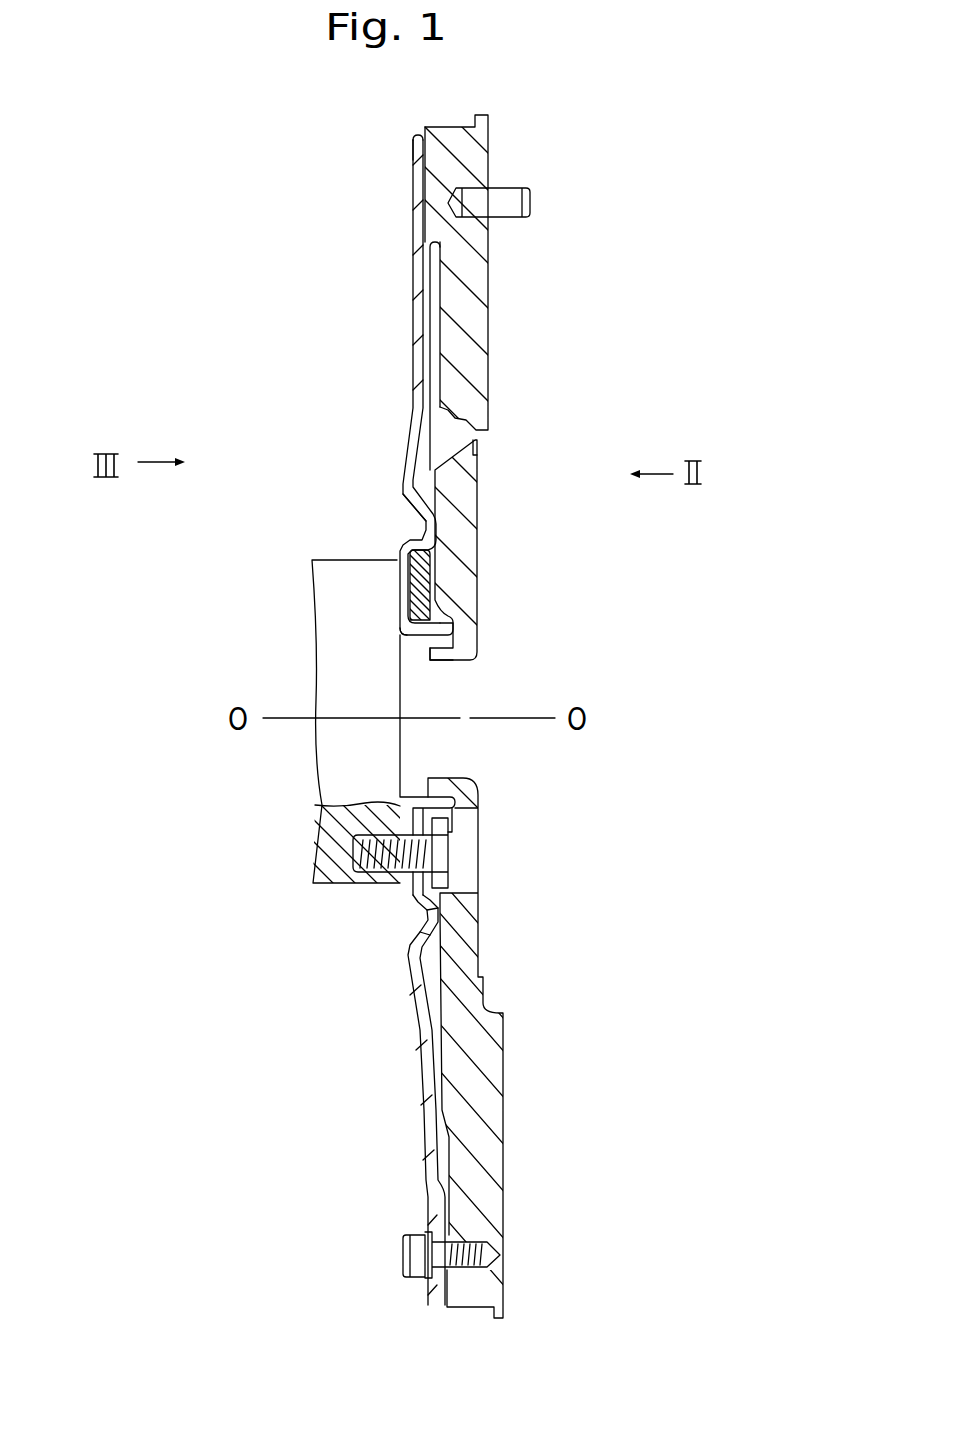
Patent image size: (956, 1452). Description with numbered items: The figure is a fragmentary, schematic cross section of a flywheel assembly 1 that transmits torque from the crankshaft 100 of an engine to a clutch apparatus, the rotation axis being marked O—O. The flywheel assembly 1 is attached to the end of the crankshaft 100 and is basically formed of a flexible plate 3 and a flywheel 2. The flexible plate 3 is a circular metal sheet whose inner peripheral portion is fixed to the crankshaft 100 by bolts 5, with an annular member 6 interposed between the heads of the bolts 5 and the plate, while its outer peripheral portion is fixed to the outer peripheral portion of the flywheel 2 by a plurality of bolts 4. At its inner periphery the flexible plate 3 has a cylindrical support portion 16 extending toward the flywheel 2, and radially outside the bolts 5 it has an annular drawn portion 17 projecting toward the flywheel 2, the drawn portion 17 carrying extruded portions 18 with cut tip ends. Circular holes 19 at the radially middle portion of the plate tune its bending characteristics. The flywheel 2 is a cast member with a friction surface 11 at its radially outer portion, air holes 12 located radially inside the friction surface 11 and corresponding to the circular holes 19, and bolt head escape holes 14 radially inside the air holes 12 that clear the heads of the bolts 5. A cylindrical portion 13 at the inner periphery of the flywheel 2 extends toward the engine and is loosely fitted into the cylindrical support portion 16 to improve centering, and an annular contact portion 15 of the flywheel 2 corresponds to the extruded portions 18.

The flywheel assembly 1 is at (612, 305).
The flywheel 2 is at (460, 388).
The flexible plate 3 is at (386, 448).
The bolts 4 is at (418, 1253).
The bolts 5 is at (365, 884).
The annular member 6 is at (418, 590).
The friction surface 11 is at (490, 282).
The air holes 12 is at (480, 447).
The cylindrical portion 13 is at (440, 654).
The bolt head escape holes 14 is at (465, 890).
The annular contact portion 15 is at (437, 913).
The cylindrical support portion 16 is at (407, 645).
The drawn portion 17 is at (418, 521).
The extruded portions 18 is at (420, 918).
The circular holes 19 is at (413, 277).
The crankshaft 100 is at (330, 832).